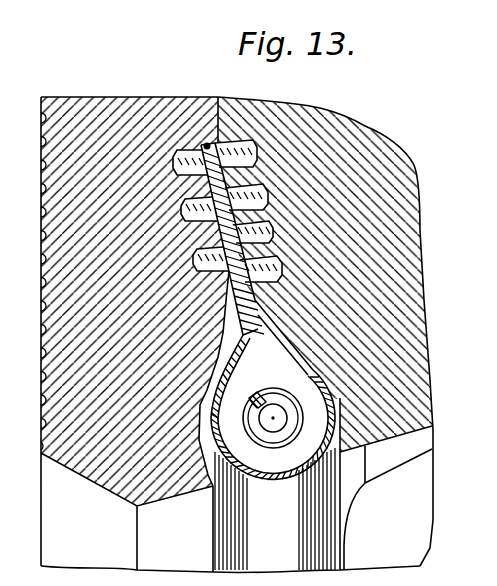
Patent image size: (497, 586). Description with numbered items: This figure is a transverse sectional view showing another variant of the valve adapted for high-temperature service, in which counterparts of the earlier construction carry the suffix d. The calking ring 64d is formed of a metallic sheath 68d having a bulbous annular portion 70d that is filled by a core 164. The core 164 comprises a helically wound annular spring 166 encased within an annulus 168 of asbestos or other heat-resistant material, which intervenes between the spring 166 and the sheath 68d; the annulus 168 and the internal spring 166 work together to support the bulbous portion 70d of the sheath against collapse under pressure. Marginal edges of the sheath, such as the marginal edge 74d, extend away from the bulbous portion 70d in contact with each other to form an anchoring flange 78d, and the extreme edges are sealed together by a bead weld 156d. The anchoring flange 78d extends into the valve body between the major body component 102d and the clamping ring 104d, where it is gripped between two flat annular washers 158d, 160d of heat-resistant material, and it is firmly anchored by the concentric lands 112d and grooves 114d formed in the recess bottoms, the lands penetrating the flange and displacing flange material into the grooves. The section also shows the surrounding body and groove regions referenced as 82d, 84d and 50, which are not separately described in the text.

The clamping ring 104d is at (120, 125).
The major body component 102d is at (366, 135).
The bead weld 156d is at (207, 143).
The flat annular washer 160d is at (253, 157).
The anchoring flange 78d is at (256, 200).
The groove 114d is at (185, 208).
The land 112d is at (187, 234).
The marginal edge of sheath 74d is at (195, 262).
The flat annular washer 158d is at (217, 293).
The cavity wall 82d is at (203, 410).
The core 164 is at (232, 423).
The bulbous annular portion 70d is at (225, 451).
The annulus 168 is at (312, 440).
The helically wound annular spring 166 is at (270, 400).
The lower face of second block 84d is at (335, 372).
The base member 50 is at (406, 524).
The calking ring 64d is at (248, 484).
The metallic sheath 68d is at (255, 483).